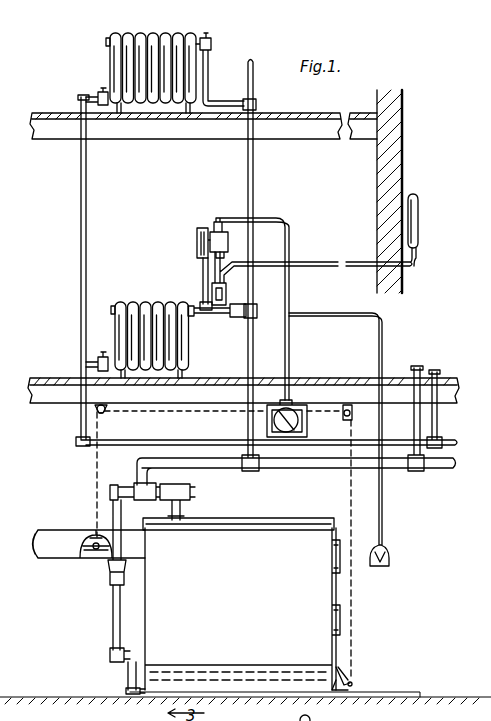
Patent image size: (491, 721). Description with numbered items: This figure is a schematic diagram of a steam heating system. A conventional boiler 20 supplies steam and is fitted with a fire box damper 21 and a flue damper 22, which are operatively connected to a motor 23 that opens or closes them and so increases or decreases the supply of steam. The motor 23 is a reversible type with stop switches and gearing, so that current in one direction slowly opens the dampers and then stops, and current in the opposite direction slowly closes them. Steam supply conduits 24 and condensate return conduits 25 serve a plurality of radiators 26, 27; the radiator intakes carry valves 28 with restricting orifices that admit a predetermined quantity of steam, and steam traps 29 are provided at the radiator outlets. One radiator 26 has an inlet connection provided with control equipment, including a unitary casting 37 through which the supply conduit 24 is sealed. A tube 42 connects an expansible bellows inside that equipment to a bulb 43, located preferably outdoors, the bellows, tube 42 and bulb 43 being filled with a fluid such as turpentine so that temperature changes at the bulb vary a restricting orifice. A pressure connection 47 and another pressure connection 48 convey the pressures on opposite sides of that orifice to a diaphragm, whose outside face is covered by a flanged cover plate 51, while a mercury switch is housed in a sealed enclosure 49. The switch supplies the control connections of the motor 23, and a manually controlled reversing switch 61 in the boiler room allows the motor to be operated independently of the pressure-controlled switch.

The boiler 20 is at (241, 604).
The fire box damper 21 is at (352, 680).
The flue damper 22 is at (95, 566).
The motor 23 is at (292, 404).
The steam supply conduit 24 is at (254, 318).
The condensate return conduit 25 is at (81, 293).
The radiator 26 is at (160, 303).
The radiator 27 is at (158, 40).
The valve 28 is at (208, 43).
The steam trap 29 is at (100, 92).
The unitary casting 37 is at (236, 317).
The tube 42 is at (325, 264).
The bulb 43 is at (419, 220).
The pressure connection 47 is at (227, 291).
The pressure connection 48 is at (203, 289).
The enclosure 49 is at (215, 231).
The flanged cover plate 51 is at (197, 239).
The manually controlled reversing switch 61 is at (379, 568).